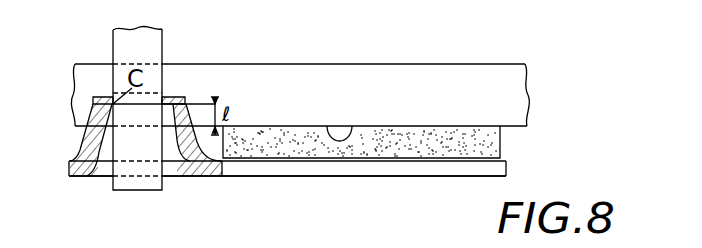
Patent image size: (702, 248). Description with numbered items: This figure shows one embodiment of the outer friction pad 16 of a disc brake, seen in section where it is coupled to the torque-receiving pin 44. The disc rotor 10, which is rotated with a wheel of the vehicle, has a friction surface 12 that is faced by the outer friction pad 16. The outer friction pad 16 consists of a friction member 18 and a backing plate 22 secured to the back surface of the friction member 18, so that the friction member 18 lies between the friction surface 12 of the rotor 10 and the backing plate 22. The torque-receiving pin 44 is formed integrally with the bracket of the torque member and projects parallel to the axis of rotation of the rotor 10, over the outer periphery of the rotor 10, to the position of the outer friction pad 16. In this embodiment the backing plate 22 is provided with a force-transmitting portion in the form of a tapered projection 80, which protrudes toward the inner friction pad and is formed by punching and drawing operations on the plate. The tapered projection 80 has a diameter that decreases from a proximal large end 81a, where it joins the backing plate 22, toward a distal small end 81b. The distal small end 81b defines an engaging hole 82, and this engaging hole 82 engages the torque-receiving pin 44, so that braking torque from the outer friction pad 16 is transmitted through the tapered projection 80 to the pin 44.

The disc rotor 10 is at (510, 106).
The friction surface 12 is at (350, 126).
The outer friction pad 16 is at (322, 176).
The friction member 18 is at (493, 150).
The backing plate 22 is at (431, 167).
The torque-receiving pin 44 is at (150, 36).
The tapered projection 80 is at (124, 121).
The proximal large end 81a is at (87, 164).
The distal small end 81b is at (94, 97).
The engaging hole 82 is at (167, 96).